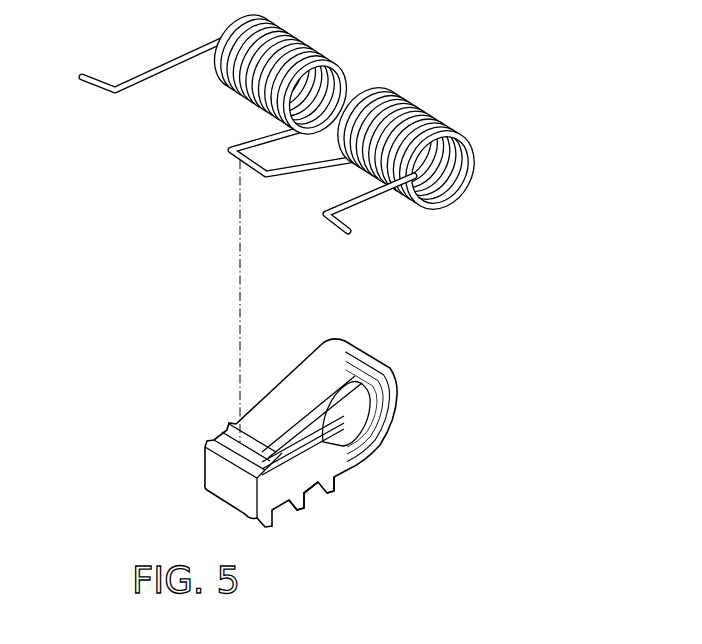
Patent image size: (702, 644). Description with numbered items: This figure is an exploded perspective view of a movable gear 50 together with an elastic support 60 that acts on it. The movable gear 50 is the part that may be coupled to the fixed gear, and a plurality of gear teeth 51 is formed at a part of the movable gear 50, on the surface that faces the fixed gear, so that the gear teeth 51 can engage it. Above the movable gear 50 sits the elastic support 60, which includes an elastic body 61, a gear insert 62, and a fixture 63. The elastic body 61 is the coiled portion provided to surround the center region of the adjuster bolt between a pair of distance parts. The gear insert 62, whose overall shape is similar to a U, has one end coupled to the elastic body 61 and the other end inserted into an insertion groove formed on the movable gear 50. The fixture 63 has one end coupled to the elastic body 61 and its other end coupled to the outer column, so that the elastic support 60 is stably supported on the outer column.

The movable gear 50 is at (430, 398).
The gear teeth 51 is at (312, 498).
The elastic support 60 is at (285, 127).
The elastic body 61 is at (228, 98).
The gear insert 62 is at (243, 163).
The fixture 63 is at (340, 192).